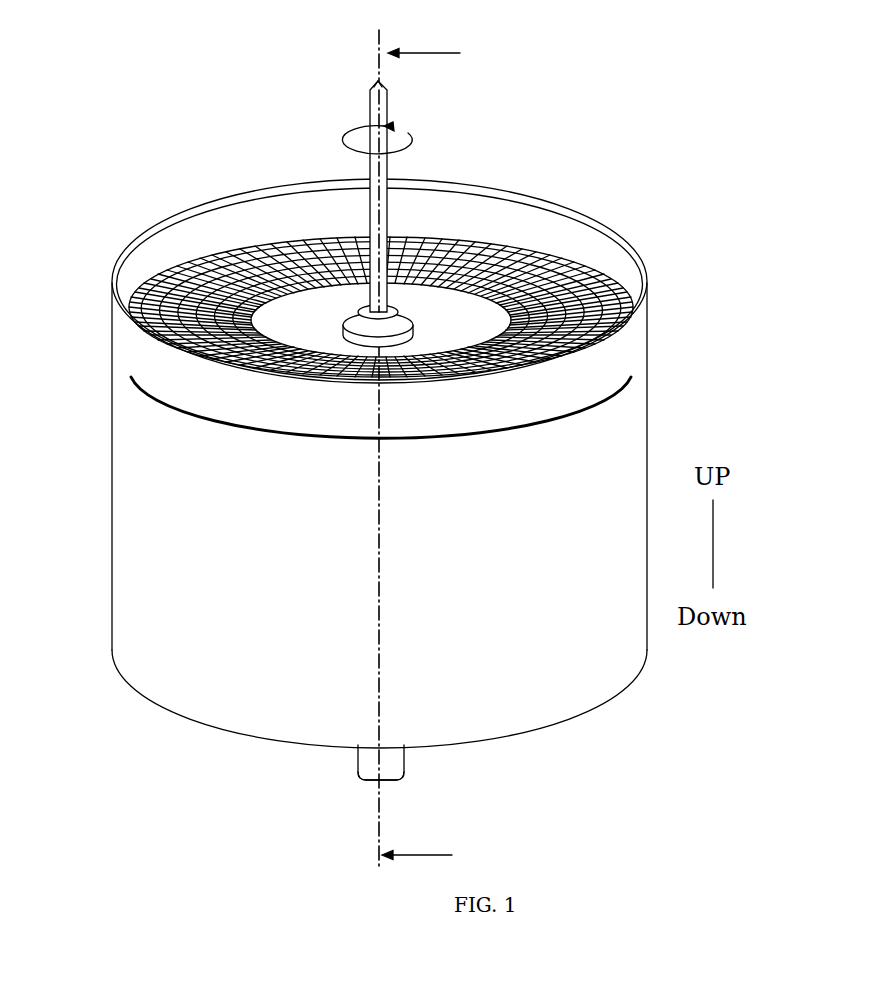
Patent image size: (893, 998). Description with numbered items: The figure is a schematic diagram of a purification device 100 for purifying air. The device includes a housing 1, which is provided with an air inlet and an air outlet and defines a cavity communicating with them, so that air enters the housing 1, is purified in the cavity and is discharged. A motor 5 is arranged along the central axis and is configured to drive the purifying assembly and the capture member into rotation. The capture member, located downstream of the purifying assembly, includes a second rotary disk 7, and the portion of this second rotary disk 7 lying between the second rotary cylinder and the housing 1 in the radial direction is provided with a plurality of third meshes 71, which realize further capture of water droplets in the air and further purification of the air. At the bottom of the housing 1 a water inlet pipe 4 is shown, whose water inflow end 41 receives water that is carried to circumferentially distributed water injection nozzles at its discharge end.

The purification device 100 is at (652, 87).
The housing 1 is at (132, 475).
The second rotary disk 7 is at (280, 243).
The third mesh 71 is at (182, 267).
The motor 5 is at (370, 167).
The water inlet pipe 4 is at (398, 755).
The water inflow end 41 is at (373, 778).